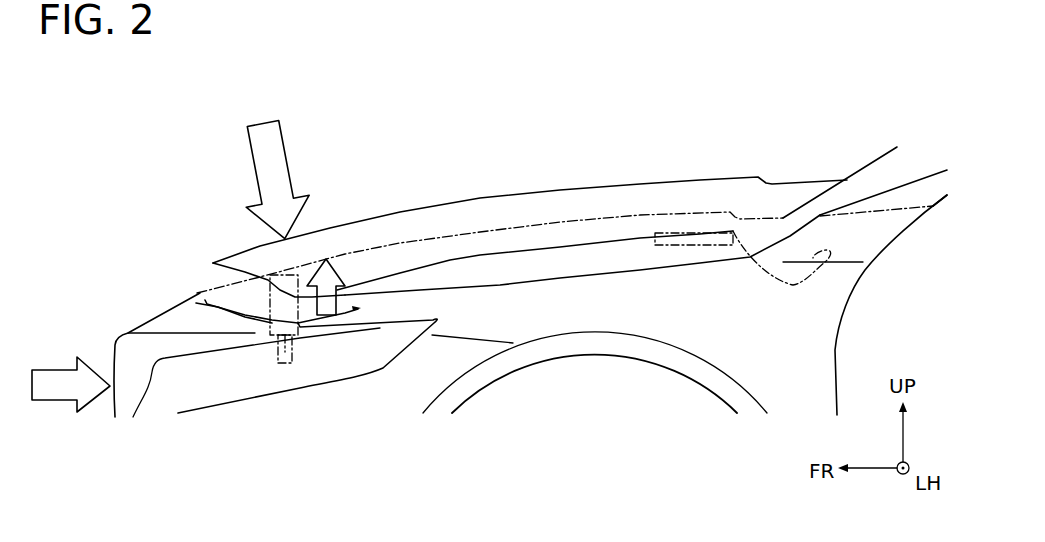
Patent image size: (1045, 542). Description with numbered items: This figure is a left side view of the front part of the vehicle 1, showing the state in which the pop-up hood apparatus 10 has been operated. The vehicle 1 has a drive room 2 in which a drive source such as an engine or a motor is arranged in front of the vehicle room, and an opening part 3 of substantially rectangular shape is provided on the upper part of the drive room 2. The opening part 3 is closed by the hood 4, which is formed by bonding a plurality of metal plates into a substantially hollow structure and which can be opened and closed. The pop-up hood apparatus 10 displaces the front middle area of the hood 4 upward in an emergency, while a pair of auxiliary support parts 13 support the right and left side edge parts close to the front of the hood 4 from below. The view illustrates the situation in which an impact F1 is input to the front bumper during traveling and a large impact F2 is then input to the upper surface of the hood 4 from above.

The vehicle 1 is at (455, 137).
The drive room 2 is at (248, 300).
The opening part 3 is at (407, 297).
The hood 4 is at (408, 240).
The pop-up hood apparatus 10 is at (263, 329).
The auxiliary support part 13 is at (301, 337).
The impact F1 is at (53, 401).
The impact F2 is at (262, 120).